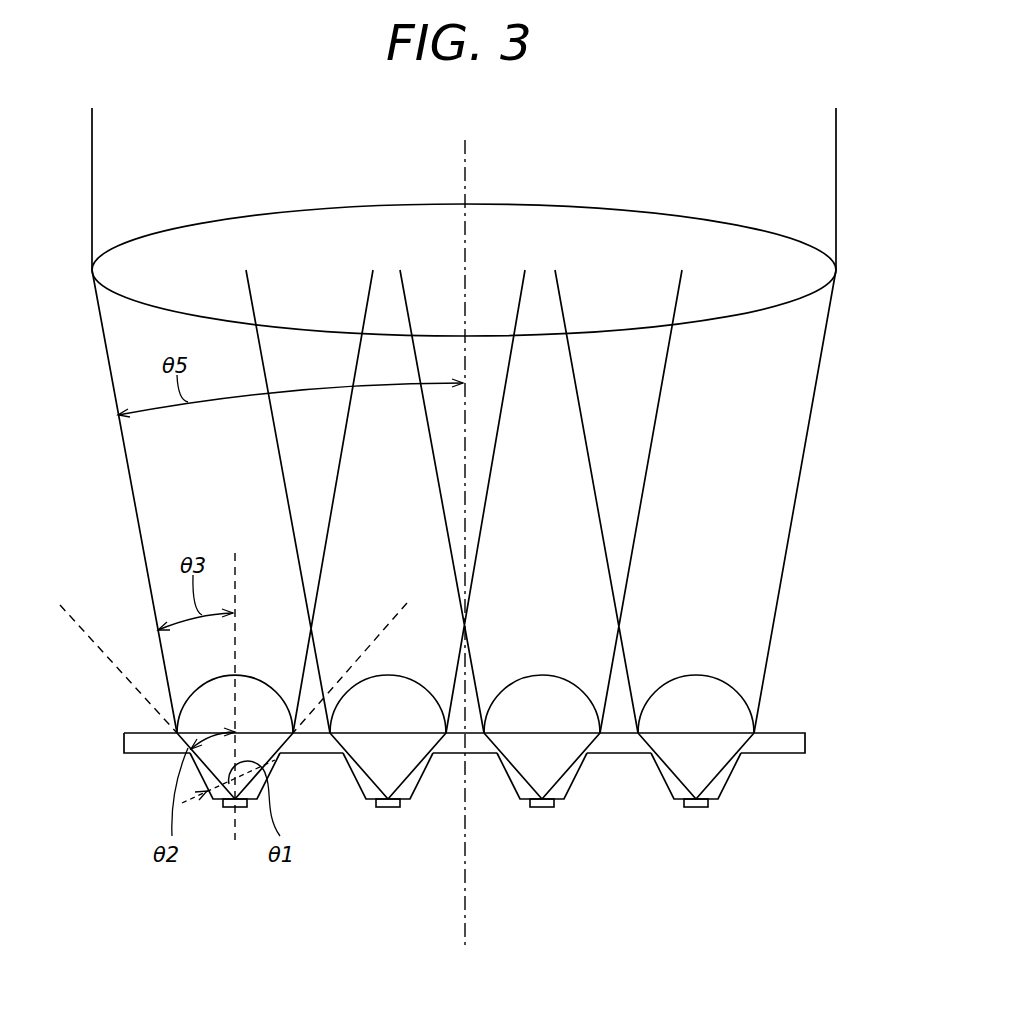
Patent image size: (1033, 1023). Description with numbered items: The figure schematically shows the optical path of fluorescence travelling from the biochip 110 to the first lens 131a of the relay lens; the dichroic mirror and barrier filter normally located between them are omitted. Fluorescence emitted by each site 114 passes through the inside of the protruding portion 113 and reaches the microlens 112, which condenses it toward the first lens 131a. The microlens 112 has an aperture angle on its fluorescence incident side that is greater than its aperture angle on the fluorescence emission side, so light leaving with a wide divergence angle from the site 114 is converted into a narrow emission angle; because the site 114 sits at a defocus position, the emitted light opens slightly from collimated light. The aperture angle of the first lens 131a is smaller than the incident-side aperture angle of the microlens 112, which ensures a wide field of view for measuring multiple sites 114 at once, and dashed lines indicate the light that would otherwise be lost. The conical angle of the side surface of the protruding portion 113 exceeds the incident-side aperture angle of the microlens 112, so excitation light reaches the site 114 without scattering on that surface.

The first lens 131a is at (657, 208).
The biochip 110 is at (815, 720).
The microlens 112 is at (700, 677).
The protruding portion 113 is at (733, 777).
The site 114 is at (697, 808).